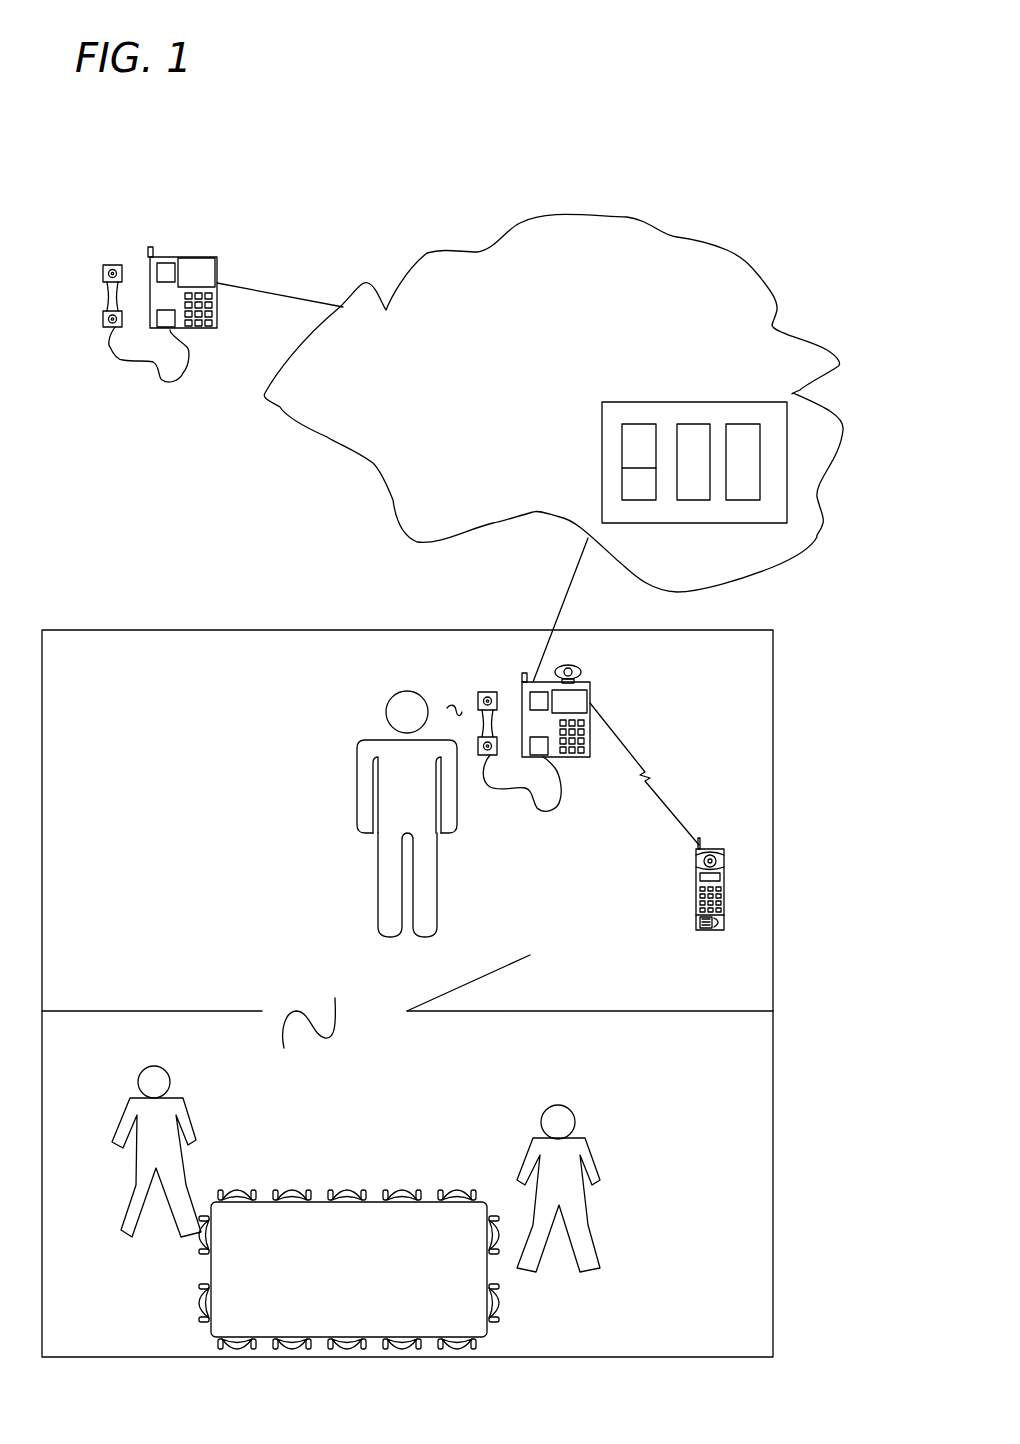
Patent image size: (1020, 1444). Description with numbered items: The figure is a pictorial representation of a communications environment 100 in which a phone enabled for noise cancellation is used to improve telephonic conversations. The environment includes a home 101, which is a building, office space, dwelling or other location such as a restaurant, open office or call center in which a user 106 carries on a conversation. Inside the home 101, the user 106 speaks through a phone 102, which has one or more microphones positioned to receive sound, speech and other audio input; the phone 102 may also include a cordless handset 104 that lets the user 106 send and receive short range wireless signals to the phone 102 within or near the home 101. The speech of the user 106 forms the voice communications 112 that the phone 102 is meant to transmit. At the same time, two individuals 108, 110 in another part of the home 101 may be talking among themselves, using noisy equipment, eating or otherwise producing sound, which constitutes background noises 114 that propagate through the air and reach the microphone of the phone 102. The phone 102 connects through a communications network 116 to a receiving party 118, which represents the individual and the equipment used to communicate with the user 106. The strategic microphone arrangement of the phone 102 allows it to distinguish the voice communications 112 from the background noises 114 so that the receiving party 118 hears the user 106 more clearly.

The communications environment 100 is at (348, 132).
The home 101 is at (150, 630).
The phone 102 is at (590, 700).
The cordless handset 104 is at (680, 885).
The user 106 is at (408, 793).
The individual 108 is at (135, 1205).
The individual 110 is at (573, 1210).
The voice communications 112 is at (456, 688).
The background noises 114 is at (336, 1040).
The communications network 116 is at (572, 357).
The receiving party 118 is at (203, 260).